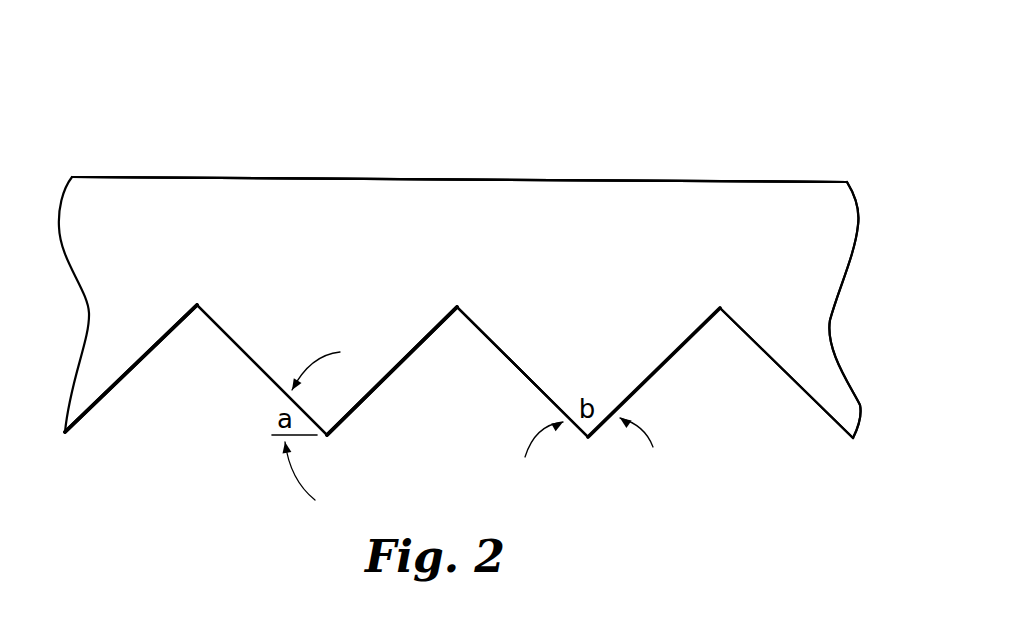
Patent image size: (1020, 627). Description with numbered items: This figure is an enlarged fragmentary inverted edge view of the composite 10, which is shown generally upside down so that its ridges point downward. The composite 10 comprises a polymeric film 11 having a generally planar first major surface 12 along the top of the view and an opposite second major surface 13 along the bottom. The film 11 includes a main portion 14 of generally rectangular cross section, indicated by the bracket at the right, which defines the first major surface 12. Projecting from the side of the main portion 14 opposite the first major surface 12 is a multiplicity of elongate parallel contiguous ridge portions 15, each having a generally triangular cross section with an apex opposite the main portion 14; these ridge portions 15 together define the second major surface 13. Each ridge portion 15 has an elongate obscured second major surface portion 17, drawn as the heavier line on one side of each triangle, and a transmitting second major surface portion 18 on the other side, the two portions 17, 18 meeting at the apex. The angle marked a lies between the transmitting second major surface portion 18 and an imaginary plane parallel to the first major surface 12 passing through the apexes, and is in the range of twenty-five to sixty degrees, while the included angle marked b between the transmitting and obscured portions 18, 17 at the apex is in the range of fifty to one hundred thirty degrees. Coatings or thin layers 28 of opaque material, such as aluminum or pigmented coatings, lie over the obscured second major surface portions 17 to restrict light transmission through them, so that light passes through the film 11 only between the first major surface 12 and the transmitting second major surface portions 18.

The composite 10 is at (623, 63).
The polymeric film 11 is at (298, 177).
The first major surface 12 is at (490, 177).
The second major surface 13 is at (210, 323).
The main portion 14 is at (863, 183).
The ridge portions 15 is at (268, 388).
The obscured second major surface portion 17 is at (123, 382).
The transmitting second major surface portion 18 is at (243, 355).
The coatings or thin layers of opaque material 28 is at (83, 418).